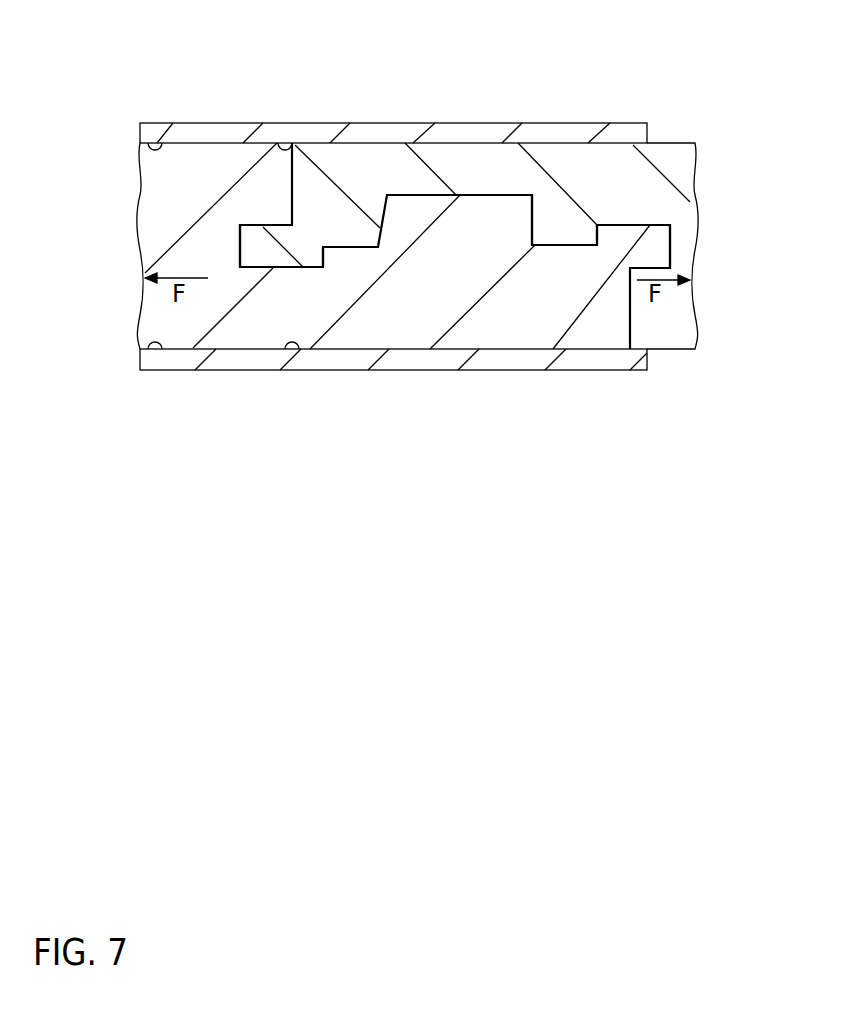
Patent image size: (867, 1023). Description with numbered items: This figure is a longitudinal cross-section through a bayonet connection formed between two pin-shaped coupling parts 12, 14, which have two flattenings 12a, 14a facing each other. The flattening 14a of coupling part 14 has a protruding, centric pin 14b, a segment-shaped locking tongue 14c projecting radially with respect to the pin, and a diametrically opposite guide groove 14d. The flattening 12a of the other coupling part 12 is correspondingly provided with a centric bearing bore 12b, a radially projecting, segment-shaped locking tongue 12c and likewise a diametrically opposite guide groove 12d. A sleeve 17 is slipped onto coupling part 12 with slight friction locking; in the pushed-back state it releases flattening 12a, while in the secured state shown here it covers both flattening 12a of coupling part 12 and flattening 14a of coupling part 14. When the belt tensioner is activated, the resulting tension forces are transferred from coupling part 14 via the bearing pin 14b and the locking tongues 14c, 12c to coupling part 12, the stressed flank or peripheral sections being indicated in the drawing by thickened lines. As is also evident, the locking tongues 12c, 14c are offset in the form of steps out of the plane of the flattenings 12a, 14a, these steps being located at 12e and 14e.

The coupling part 12 is at (642, 182).
The coupling part 14 is at (280, 331).
The sleeve 17 is at (298, 123).
The flattening 12a is at (352, 250).
The bearing bore 12b is at (535, 223).
The locking tongue 12c is at (292, 268).
The guide groove 12d is at (670, 254).
The step 12e is at (323, 257).
The flattening 14a is at (562, 243).
The pin 14b is at (433, 193).
The locking tongue 14c is at (651, 226).
The guide groove 14d is at (245, 245).
The step 14e is at (598, 237).